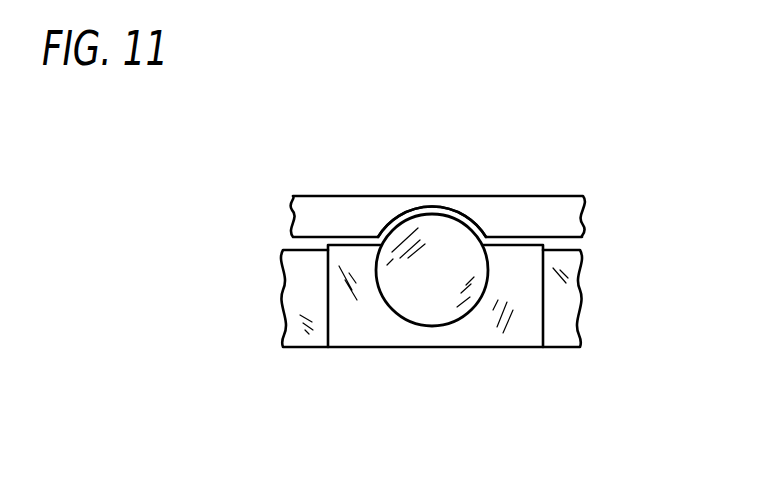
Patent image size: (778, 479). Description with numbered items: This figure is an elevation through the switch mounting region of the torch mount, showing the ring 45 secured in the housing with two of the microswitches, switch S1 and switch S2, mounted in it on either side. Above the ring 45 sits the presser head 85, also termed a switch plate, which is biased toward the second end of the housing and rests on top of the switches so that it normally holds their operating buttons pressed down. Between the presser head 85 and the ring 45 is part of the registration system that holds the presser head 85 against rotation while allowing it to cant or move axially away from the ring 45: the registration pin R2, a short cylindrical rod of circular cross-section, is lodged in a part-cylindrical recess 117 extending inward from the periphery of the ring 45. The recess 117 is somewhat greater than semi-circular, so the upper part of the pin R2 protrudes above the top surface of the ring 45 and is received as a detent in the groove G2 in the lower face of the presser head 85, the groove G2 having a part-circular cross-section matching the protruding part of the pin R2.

The ring 45 is at (353, 327).
The switch S1 is at (303, 299).
The switch S2 is at (556, 300).
The presser head 85 is at (549, 196).
The groove G2 is at (433, 207).
The part-cylindrical recess 117 is at (479, 325).
The registration pin R2 is at (427, 302).